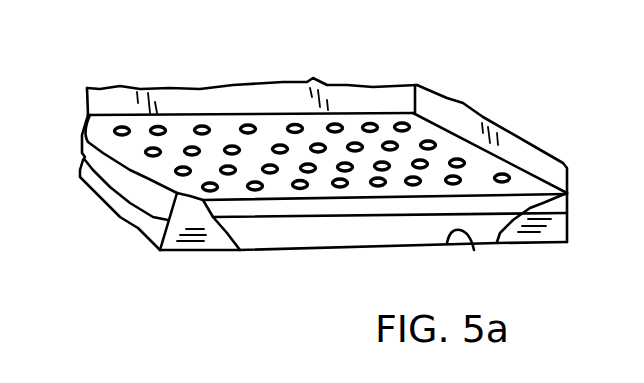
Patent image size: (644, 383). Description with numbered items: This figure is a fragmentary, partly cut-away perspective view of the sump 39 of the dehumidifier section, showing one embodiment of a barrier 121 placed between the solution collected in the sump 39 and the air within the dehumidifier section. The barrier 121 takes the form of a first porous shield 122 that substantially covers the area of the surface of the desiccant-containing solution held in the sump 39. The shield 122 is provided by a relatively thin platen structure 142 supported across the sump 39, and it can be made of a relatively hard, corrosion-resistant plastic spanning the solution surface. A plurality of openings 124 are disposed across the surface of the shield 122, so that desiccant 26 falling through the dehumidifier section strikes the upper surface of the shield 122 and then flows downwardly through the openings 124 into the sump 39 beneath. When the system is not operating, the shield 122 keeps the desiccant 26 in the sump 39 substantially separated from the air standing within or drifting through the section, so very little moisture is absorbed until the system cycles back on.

The barrier 121 is at (213, 140).
The first porous shield 122 is at (338, 140).
The openings 124 is at (459, 160).
The platen structure 142 is at (300, 198).
The desiccant 26 is at (408, 237).
The sump 39 is at (474, 250).